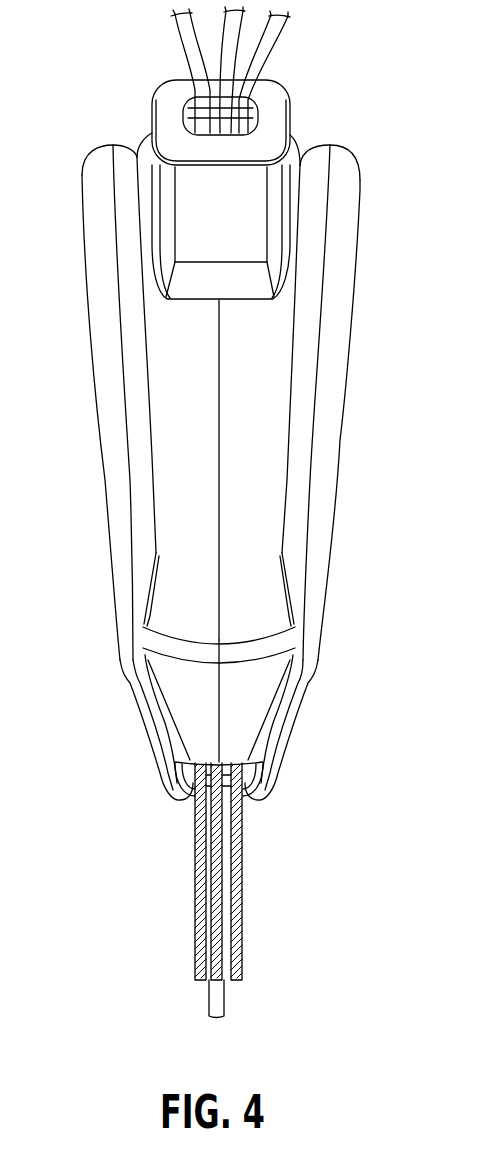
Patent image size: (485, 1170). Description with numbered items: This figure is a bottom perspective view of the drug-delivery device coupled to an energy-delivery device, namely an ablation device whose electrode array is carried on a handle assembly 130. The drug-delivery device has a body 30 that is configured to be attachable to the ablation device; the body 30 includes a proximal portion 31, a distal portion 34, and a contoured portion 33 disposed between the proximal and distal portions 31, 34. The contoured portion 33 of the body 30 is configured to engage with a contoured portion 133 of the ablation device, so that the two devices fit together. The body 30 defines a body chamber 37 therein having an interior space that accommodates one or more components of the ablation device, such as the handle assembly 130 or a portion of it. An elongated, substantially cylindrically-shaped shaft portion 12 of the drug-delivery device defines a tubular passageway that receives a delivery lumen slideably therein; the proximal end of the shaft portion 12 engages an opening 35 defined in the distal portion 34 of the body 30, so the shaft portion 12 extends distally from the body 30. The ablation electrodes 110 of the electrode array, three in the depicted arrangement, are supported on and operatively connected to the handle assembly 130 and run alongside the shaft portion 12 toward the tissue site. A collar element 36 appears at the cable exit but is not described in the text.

The shaft portion 12 is at (203, 999).
The body 30 is at (232, 430).
The proximal portion 31 is at (357, 422).
The contoured portion 33 is at (106, 658).
The distal portion 34 is at (304, 740).
The opening 35 is at (247, 810).
The collar 36 is at (277, 782).
The body chamber 37 is at (289, 602).
The ablation electrodes 110 is at (197, 893).
The handle assembly 130 is at (182, 388).
The contoured portion 133 is at (180, 610).